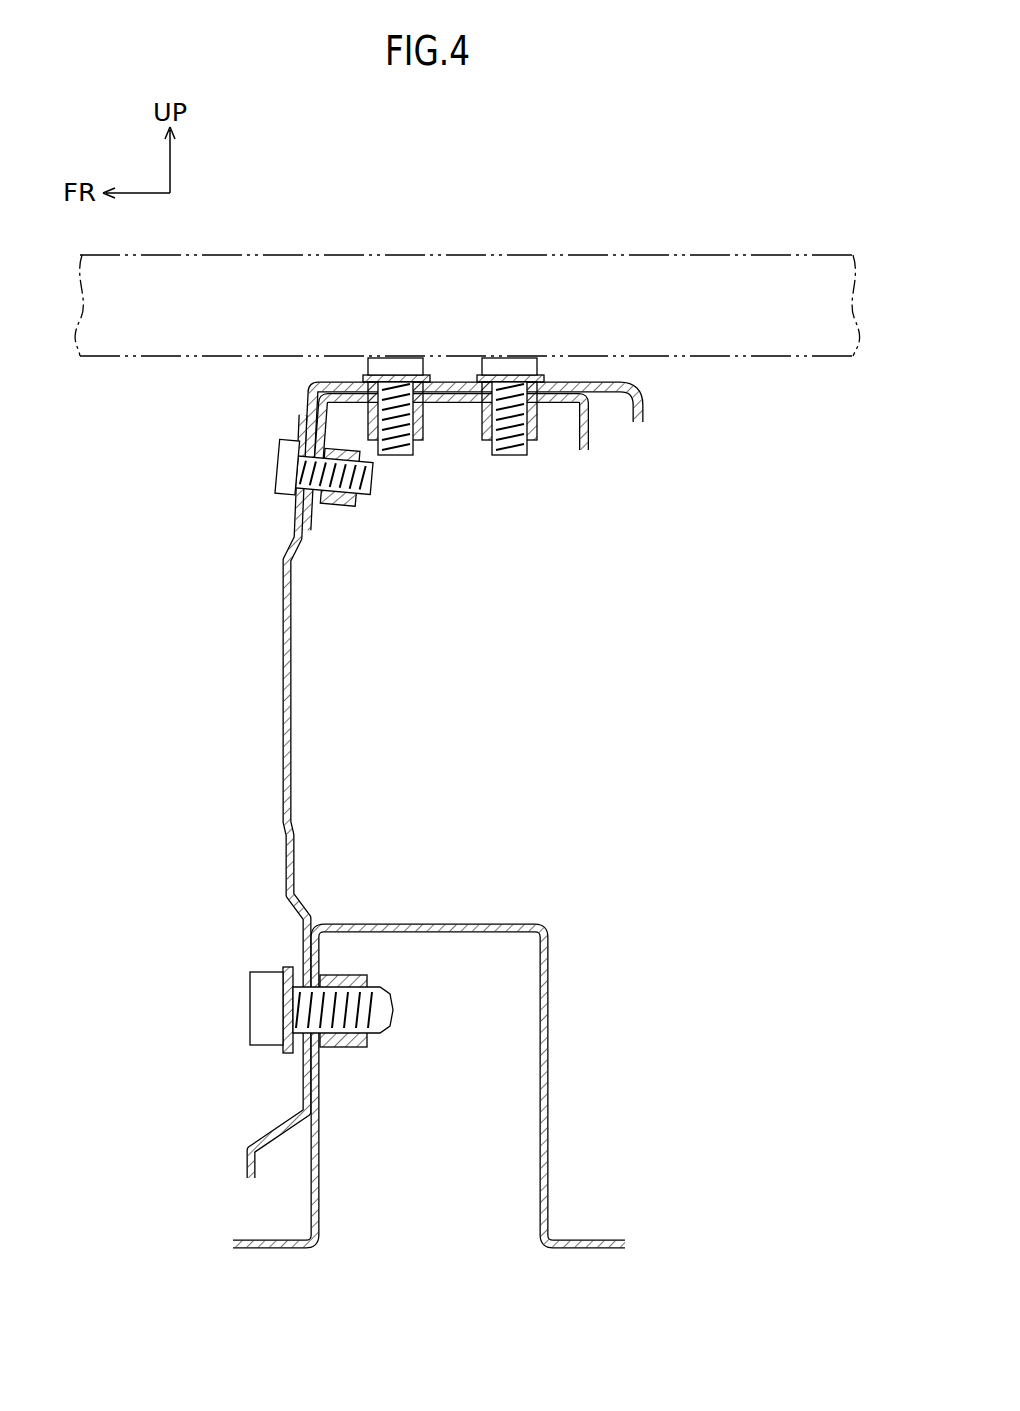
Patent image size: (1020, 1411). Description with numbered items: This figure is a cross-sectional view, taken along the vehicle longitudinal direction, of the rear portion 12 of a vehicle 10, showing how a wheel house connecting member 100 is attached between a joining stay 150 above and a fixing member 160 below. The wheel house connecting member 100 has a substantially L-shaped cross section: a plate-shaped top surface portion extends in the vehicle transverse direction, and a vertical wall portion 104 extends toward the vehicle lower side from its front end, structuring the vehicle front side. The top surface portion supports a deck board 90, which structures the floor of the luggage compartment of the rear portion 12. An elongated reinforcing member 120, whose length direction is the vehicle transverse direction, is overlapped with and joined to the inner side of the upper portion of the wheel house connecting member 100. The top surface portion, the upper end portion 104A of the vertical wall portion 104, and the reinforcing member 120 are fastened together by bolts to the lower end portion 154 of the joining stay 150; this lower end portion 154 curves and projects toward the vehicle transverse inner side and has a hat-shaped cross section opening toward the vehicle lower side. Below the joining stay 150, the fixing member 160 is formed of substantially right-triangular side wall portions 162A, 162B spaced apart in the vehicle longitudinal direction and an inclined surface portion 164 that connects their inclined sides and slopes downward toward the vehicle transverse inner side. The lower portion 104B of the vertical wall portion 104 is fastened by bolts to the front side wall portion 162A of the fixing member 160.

The vehicle 10 is at (618, 191).
The rear portion 12 is at (695, 187).
The deck board 90 is at (693, 255).
The wheel house connecting member 100 is at (295, 412).
The vertical wall portion 104 is at (238, 796).
The upper end portion 104A is at (297, 510).
The lower portion 104B is at (303, 1078).
The reinforcing member 120 is at (451, 416).
The joining stay 150 is at (570, 416).
The lower end portion 154 is at (550, 403).
The fixing member 160 is at (412, 1049).
The side wall portion 162A is at (311, 1164).
The side wall portion 162B is at (549, 1108).
The inclined surface portion 164 is at (474, 923).